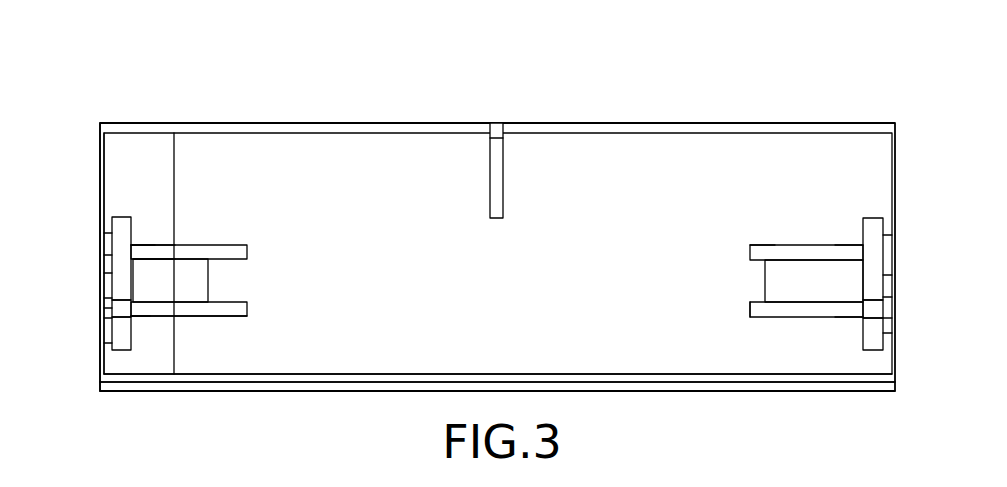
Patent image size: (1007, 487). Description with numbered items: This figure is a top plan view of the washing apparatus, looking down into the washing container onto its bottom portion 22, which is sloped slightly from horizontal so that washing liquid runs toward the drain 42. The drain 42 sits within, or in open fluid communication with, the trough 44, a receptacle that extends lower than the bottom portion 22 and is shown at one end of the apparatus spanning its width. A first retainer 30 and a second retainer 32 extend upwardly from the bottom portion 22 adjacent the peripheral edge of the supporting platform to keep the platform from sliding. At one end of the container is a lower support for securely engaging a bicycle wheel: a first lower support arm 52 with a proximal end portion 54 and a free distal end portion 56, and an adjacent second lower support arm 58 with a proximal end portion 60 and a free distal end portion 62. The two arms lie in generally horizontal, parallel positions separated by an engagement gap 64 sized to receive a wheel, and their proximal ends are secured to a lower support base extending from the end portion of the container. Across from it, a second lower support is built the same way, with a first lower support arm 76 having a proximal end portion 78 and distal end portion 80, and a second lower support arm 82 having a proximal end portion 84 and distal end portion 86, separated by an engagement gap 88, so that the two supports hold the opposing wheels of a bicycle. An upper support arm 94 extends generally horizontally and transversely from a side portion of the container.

The bottom portion 22 is at (420, 284).
The first retainer 30 is at (173, 318).
The second retainer 32 is at (174, 200).
The drain 42 is at (136, 266).
The trough 44 is at (127, 148).
The first lower support arm 52 is at (188, 321).
The proximal end portion 54 is at (144, 336).
The distal end portion 56 is at (262, 308).
The second lower support arm 58 is at (153, 247).
The proximal end portion 60 is at (143, 232).
The distal end portion 62 is at (260, 241).
The engagement gap 64 is at (208, 280).
The first lower support arm 76 is at (793, 318).
The proximal end portion 78 is at (841, 331).
The distal end portion 80 is at (738, 308).
The second lower support arm 82 is at (786, 246).
The proximal end portion 84 is at (848, 233).
The distal end portion 86 is at (743, 237).
The engagement gap 88 is at (765, 282).
The upper support arm 94 is at (500, 188).